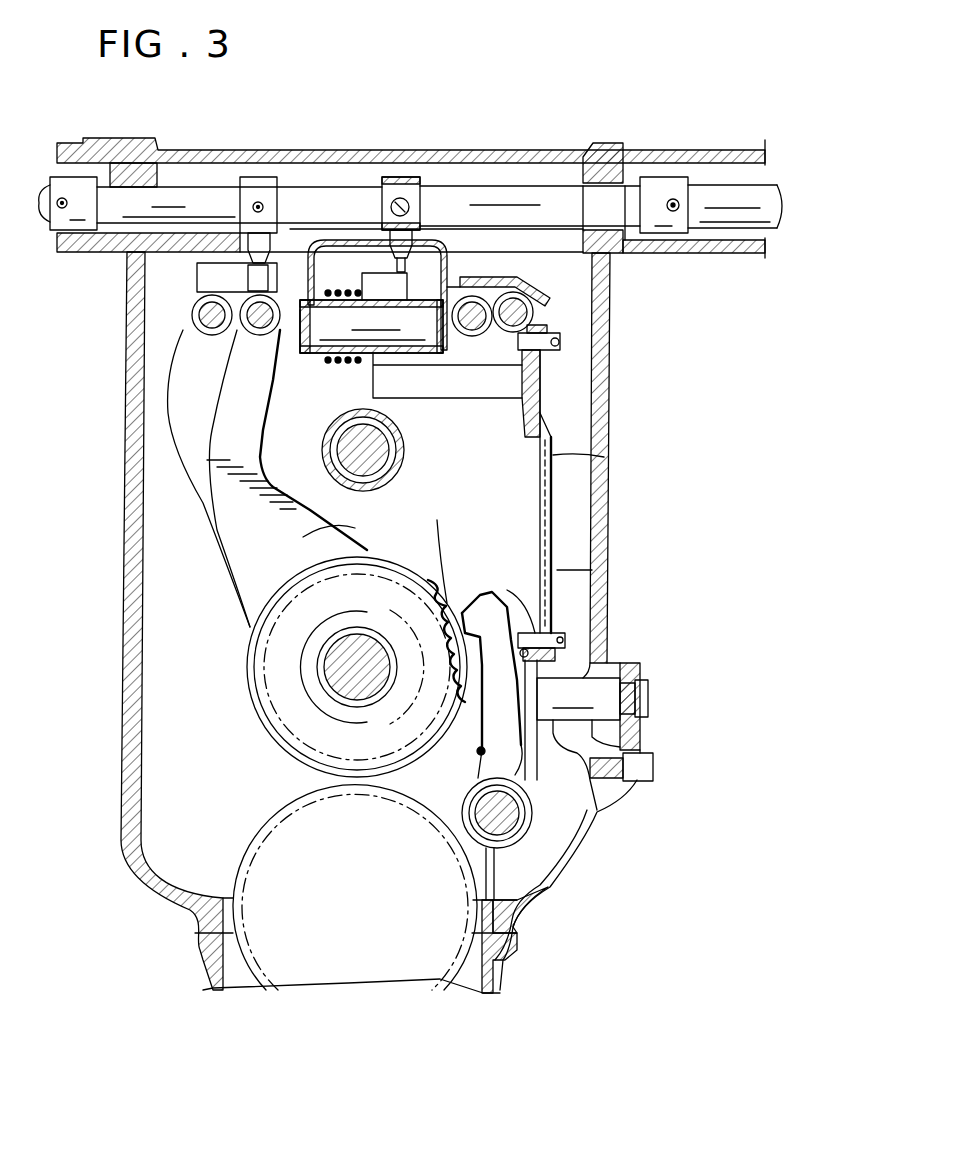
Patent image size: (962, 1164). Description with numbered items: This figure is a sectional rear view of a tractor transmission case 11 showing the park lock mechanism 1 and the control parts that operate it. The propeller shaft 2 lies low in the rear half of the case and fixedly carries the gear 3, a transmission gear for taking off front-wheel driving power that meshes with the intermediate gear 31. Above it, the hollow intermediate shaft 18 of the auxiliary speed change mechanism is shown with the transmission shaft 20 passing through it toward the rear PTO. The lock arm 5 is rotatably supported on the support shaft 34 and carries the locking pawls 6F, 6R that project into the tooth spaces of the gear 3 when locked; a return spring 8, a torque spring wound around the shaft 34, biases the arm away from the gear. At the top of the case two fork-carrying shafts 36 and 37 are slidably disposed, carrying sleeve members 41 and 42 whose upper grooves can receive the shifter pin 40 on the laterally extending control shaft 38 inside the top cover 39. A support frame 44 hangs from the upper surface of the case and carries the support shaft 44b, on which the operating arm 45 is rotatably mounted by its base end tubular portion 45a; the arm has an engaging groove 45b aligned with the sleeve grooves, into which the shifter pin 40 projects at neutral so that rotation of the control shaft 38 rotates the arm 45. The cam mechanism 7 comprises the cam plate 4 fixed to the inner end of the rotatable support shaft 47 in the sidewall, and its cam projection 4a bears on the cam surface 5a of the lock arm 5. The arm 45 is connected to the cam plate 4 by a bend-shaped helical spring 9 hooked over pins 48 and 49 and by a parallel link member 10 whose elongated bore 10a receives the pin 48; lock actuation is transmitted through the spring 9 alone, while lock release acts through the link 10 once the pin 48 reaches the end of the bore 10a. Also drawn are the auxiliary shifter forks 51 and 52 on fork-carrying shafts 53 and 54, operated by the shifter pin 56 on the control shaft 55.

The park lock mechanism 1 is at (484, 581).
The propeller shaft 2 is at (337, 697).
The gear 3 is at (437, 546).
The cam plate 4 is at (562, 588).
The cam projection 4a is at (592, 570).
The lock arm 5 is at (462, 783).
The cam surface 5a is at (590, 690).
The locking pawl 6F is at (440, 690).
The locking pawl 6R is at (462, 613).
The cam mechanism 7 is at (570, 662).
The return spring 8 is at (597, 813).
The helical spring 9 is at (604, 457).
The link member 10 is at (534, 436).
The elongated bore 10a is at (562, 362).
The transmission case 11 is at (600, 392).
The intermediate shaft 18 is at (337, 428).
The transmission shaft 20 is at (404, 458).
The intermediate gear 31 is at (237, 857).
The support shaft 34 is at (518, 828).
The fork-carrying shaft 36 is at (492, 300).
The fork-carrying shaft 37 is at (560, 307).
The control shaft 38 is at (517, 200).
The top cover 39 is at (330, 150).
The shifter pin 40 is at (382, 237).
The sleeve member 41 is at (474, 336).
The sleeve member 42 is at (527, 295).
The support frame 44 is at (317, 245).
The support shaft 44b is at (340, 356).
The operating arm 45 is at (400, 378).
The base end tubular portion 45a is at (303, 322).
The engaging groove 45b is at (432, 282).
The support shaft 47 is at (649, 692).
The pin 48 is at (562, 342).
The pin 49 is at (562, 637).
The shifter fork 51 is at (303, 537).
The shifter fork 52 is at (197, 450).
The fork-carrying shaft 53 is at (245, 334).
The fork-carrying shaft 54 is at (192, 315).
The control shaft 55 is at (192, 195).
The shifter pin 56 is at (250, 277).